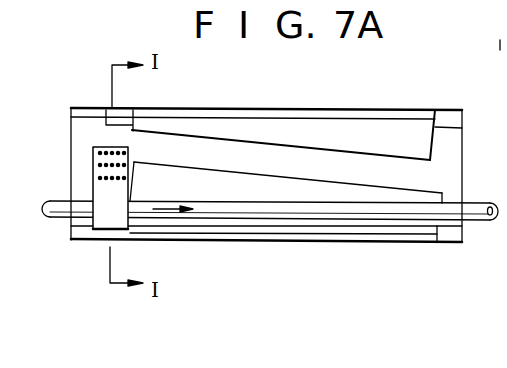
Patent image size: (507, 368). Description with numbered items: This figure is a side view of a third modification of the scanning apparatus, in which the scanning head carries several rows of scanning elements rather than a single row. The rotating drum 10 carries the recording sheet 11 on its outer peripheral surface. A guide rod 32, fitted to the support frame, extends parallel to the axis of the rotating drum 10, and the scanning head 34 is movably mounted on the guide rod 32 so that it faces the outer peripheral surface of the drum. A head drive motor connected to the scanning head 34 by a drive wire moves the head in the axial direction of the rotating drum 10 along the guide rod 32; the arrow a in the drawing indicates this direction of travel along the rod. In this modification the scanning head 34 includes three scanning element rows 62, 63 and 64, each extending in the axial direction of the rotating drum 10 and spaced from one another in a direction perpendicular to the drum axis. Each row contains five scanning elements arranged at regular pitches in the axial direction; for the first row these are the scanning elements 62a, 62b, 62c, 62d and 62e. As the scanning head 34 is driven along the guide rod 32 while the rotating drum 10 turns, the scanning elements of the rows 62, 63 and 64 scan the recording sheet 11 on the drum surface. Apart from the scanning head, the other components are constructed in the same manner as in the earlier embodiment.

The rotating drum 10 is at (447, 120).
The recording sheet 11 is at (342, 128).
The guide rod 32 is at (477, 210).
The scanning head 34 is at (104, 219).
The scanning element row 62 is at (119, 132).
The scanning element 62a is at (99, 151).
The scanning element 62b is at (108, 151).
The scanning element 62c is at (112, 151).
The scanning element 62d is at (120, 154).
The scanning element 62e is at (121, 155).
The scanning element row 63 is at (93, 165).
The scanning element row 64 is at (93, 178).
The direction arrow a is at (170, 212).